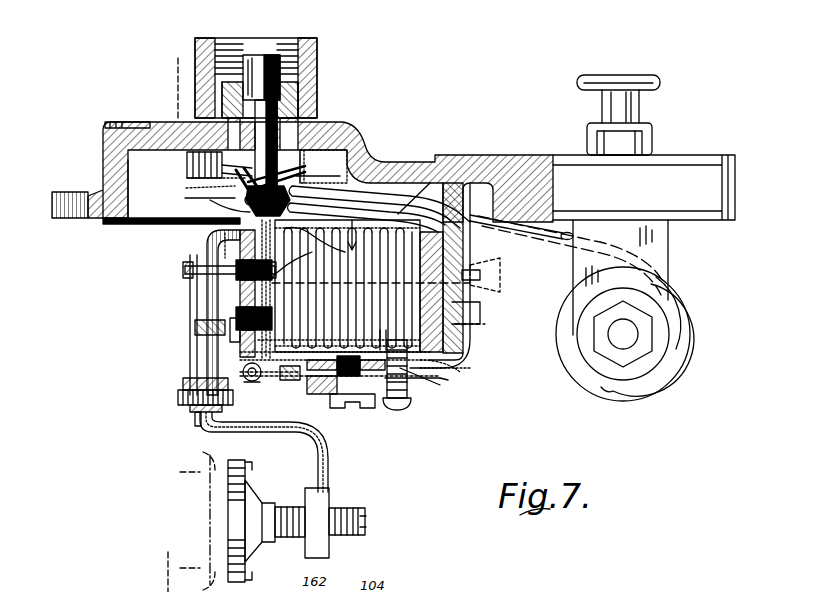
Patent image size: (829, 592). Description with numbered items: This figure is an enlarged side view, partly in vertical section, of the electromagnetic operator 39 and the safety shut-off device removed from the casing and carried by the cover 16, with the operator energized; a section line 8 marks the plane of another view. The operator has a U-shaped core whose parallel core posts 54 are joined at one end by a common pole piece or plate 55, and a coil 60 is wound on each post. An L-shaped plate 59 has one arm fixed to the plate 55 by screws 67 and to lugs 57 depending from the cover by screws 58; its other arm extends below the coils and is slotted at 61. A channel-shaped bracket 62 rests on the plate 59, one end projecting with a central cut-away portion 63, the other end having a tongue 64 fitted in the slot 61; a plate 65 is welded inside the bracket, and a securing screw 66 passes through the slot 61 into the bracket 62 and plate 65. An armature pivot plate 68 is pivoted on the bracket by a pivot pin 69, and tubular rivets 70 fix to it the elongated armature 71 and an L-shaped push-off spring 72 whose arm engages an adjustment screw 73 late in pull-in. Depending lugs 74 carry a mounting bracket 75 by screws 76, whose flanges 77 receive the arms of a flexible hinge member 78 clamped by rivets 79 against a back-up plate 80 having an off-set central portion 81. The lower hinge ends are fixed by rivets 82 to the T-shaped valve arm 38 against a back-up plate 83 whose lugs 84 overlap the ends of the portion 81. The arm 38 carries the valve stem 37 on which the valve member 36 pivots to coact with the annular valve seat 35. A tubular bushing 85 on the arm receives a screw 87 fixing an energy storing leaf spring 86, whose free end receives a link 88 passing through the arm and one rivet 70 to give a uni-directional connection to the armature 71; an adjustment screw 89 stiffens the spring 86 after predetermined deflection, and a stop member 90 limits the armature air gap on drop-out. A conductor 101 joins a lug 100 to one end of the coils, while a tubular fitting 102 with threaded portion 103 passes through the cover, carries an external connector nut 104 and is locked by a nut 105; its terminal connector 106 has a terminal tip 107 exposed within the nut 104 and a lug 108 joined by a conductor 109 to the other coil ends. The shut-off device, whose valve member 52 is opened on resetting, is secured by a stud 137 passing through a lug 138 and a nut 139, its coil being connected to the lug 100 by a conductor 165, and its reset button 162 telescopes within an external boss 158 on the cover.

The section line 8- 8 is at (166, 74).
The cover 16 is at (455, 168).
The annular valve seat 35 is at (205, 500).
The valve member 36 is at (230, 462).
The valve stem 37 is at (368, 494).
The valve arm 38 is at (212, 238).
The electromagnetic operator 39 is at (395, 225).
The valve member 52 is at (585, 401).
The core posts 54 is at (338, 268).
The pole piece or plate 55 is at (468, 350).
The lugs 57 is at (476, 318).
The screws 58 is at (494, 277).
The L-shaped plate 59 is at (426, 396).
The coil 60 is at (360, 320).
The slot 61 is at (450, 372).
The channel-shaped bracket 62 is at (292, 380).
The central cut-away portion 63 is at (282, 382).
The tongue 64 is at (460, 389).
The plate 65 is at (305, 360).
The securing screw 66 is at (356, 410).
The screws 67 is at (490, 327).
The armature pivot plate 68 is at (275, 332).
The pivot pin 69 is at (250, 384).
The tubular rivets 70 is at (262, 312).
The armature 71 is at (228, 356).
The push-off spring 72 is at (383, 340).
The adjustment screw 73 is at (396, 410).
The lugs 74 is at (185, 162).
The mounting bracket 75 is at (200, 188).
The screws 76 is at (195, 199).
The flange 77 is at (188, 160).
The flexible hinge member 78 is at (244, 198).
The rivets 79 is at (222, 170).
The back-up plate 80 is at (322, 189).
The off-set central portion 81 is at (306, 160).
The rivets 82 is at (244, 201).
The back-up plate 83 is at (270, 240).
The lugs 84 is at (300, 168).
The tubular bushing 85 is at (198, 426).
The leaf spring 86 is at (190, 298).
The screw 87 is at (180, 392).
The link 88 is at (183, 268).
The adjustment screw 89 is at (195, 328).
The stop member 90 is at (212, 244).
The lug 100 is at (322, 254).
The conductor 101 is at (370, 238).
The tubular fitting 102 is at (300, 96).
The externally threaded portion 103 is at (305, 118).
The connector nut 104 is at (320, 66).
The nut 105 is at (300, 136).
The terminal connector 106 is at (240, 112).
The terminal tip 107 is at (245, 55).
The lug 108 is at (306, 177).
The conductor 109 is at (300, 258).
The stud 137 is at (630, 335).
The lug 138 is at (648, 248).
The nut 139 is at (642, 347).
The external boss 158 is at (620, 110).
The reset button 162 is at (598, 82).
The conductor 165 is at (676, 300).